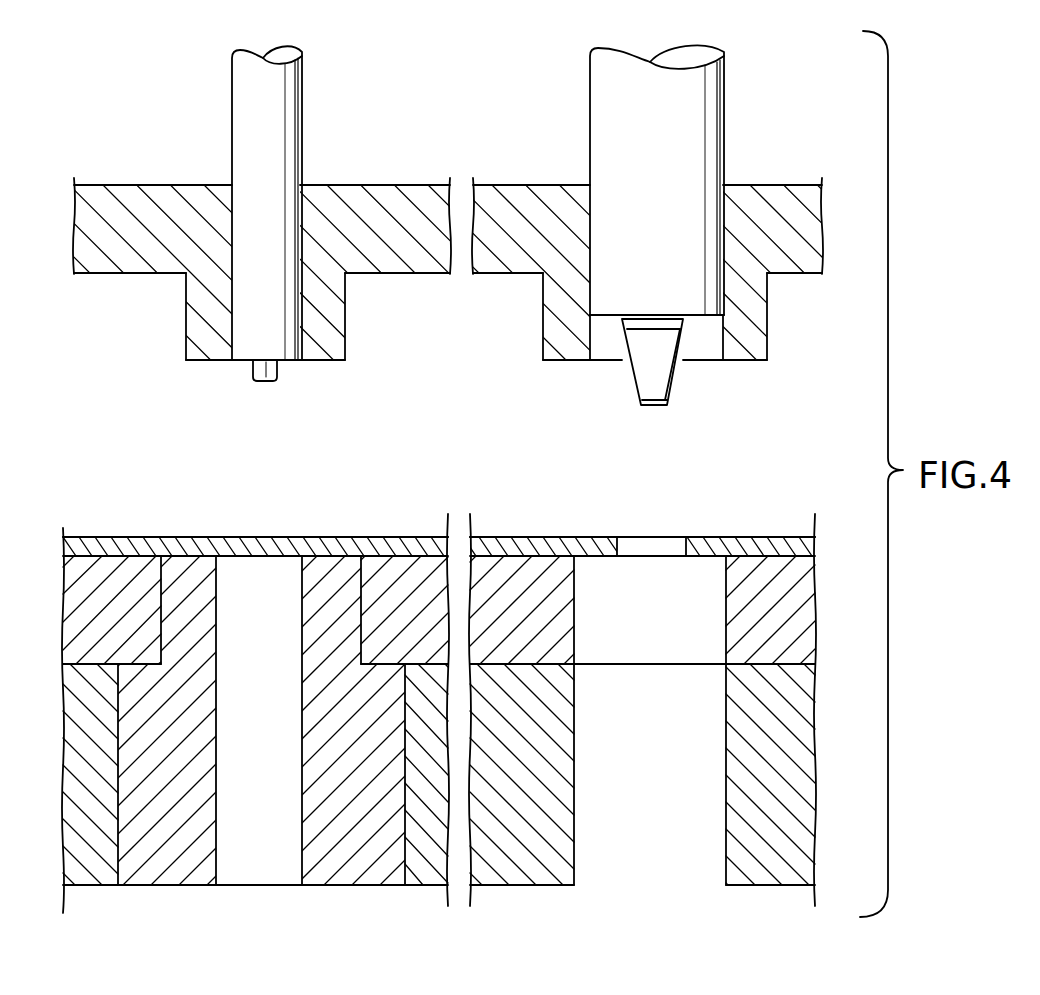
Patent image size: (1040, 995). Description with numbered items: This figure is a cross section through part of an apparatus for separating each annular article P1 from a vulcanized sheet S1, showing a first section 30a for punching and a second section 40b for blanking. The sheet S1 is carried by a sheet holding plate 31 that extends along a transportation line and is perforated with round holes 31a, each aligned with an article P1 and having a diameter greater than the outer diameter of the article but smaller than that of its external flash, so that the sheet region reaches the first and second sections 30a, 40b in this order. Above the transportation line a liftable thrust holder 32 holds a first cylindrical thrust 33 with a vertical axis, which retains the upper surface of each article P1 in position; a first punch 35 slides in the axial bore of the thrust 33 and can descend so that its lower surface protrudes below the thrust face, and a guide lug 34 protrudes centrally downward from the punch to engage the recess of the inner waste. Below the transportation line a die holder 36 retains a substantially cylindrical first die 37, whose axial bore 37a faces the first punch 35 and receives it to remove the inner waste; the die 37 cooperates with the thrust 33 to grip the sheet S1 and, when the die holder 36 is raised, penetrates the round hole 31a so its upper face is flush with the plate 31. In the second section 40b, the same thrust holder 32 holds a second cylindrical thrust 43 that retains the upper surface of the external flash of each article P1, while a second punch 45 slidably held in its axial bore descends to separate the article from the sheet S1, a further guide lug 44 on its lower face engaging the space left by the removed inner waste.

The first section 30a is at (240, 457).
The thrust holder 32 is at (385, 262).
The first cylindrical thrust 33 is at (332, 337).
The first punch 35 is at (242, 352).
The guide lug 34 is at (278, 373).
The second section 40b is at (792, 452).
The second cylindrical thrust 43 is at (555, 317).
The second punch 45 is at (614, 300).
The further guide lug 44 is at (663, 367).
The annular article P1 is at (286, 544).
The vulcanized sheet S1 is at (86, 549).
The sheet holding plate 31 is at (132, 571).
The round hole 31a is at (175, 576).
The first die 37 is at (193, 739).
The bore 37a is at (221, 610).
The die holder 36 is at (72, 727).